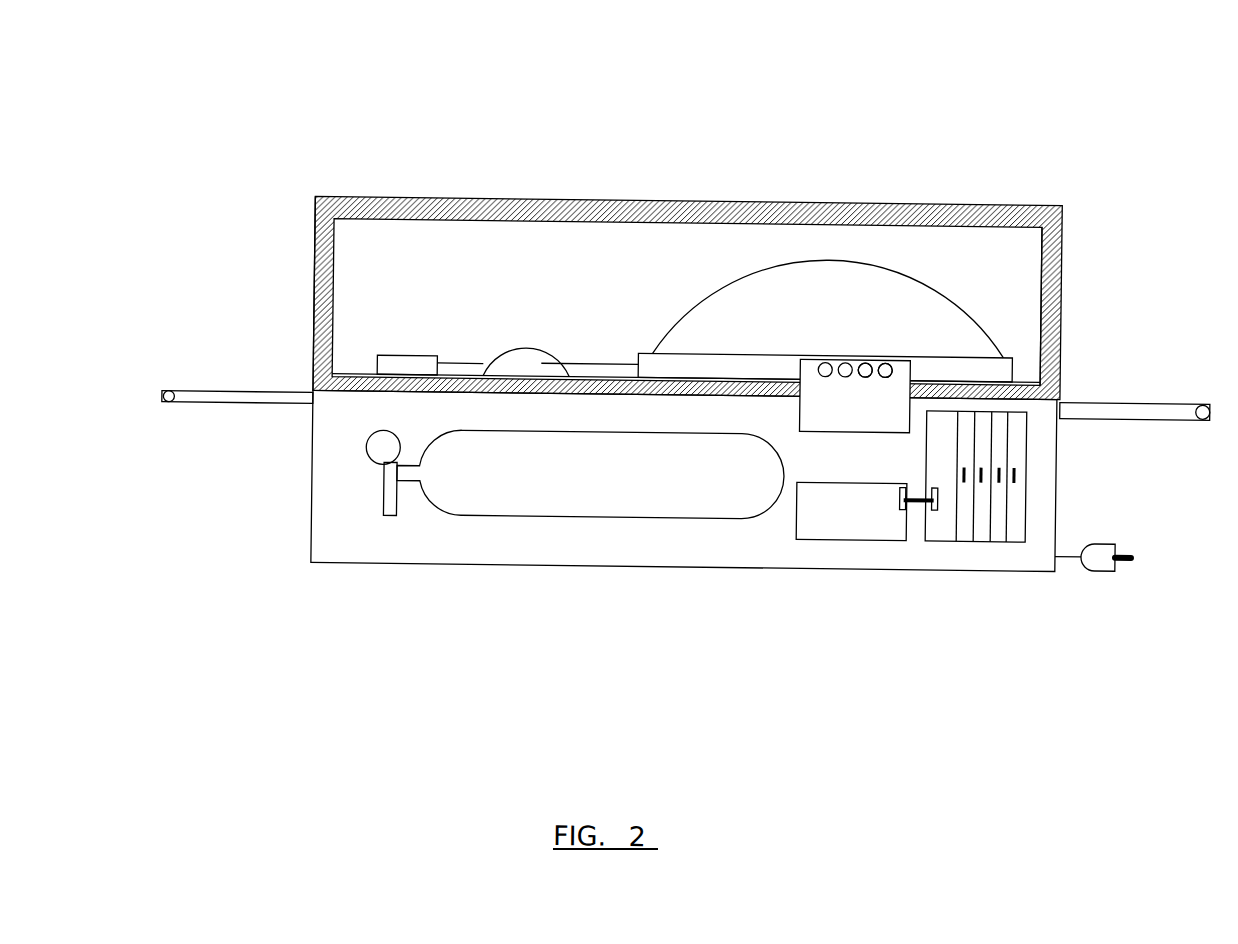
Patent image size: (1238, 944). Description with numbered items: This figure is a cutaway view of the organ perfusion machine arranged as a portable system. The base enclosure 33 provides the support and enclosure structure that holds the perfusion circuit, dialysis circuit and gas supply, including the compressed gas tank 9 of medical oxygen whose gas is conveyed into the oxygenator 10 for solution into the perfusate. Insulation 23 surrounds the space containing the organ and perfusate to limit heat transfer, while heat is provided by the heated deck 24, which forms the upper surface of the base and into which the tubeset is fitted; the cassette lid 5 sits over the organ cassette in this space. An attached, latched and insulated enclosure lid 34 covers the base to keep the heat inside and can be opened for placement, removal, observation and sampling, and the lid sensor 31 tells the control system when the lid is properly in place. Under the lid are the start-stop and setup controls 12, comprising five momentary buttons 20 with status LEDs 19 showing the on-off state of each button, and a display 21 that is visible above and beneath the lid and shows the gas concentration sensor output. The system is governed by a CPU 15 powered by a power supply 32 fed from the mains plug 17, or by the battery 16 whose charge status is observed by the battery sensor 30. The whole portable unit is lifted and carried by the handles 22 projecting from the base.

The cassette lid 5 is at (798, 259).
The compressed gas tank 9 is at (584, 501).
The oxygenator 10 is at (521, 334).
The start-stop and setup controls 12 is at (900, 365).
The CPU 15 is at (840, 521).
The battery 16 is at (968, 520).
The mains plug 17 is at (1105, 535).
The status LEDs 19 is at (850, 361).
The buttons 20 is at (875, 370).
The display 21 is at (798, 431).
The handles 22 is at (240, 398).
The insulation 23 is at (311, 209).
The heated deck 24 is at (1020, 374).
The battery sensor 30 is at (1002, 476).
The lid sensor 31 is at (1057, 378).
The power supply 32 is at (944, 522).
The base enclosure 33 is at (417, 570).
The enclosure lid 34 is at (653, 200).